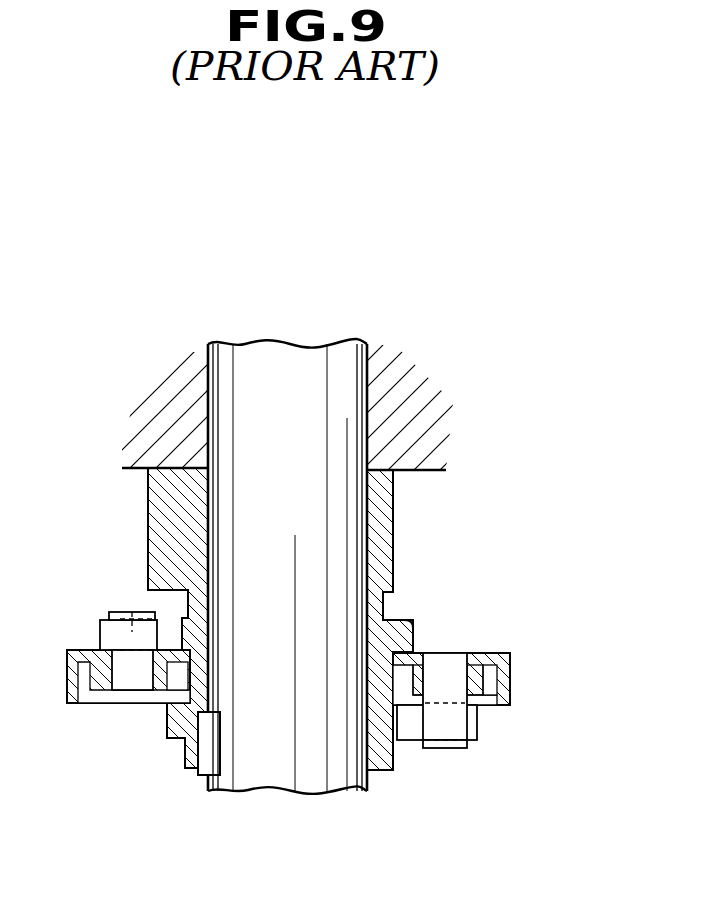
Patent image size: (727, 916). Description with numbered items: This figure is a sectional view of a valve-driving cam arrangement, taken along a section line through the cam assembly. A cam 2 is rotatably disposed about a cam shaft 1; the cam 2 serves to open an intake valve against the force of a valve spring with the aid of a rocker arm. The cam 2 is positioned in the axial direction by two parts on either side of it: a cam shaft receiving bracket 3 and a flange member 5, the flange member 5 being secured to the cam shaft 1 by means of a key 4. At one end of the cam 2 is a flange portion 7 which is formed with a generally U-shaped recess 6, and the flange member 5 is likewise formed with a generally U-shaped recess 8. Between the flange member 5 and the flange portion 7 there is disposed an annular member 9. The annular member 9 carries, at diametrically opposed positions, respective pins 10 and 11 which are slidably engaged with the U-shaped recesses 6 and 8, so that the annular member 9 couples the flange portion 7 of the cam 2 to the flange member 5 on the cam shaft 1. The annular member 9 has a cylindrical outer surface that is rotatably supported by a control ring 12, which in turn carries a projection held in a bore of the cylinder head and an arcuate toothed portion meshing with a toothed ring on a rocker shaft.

The cam shaft 1 is at (346, 363).
The cam 2 is at (395, 520).
The cam shaft receiving bracket 3 is at (415, 449).
The key 4 is at (202, 778).
The flange member 5 is at (178, 722).
The U-shaped recess 6 is at (97, 633).
The flange portion 7 is at (415, 633).
The U-shaped recess 8 is at (413, 740).
The annular member 9 is at (483, 667).
The pin 10 is at (133, 628).
The pin 11 is at (460, 750).
The control ring 12 is at (510, 680).